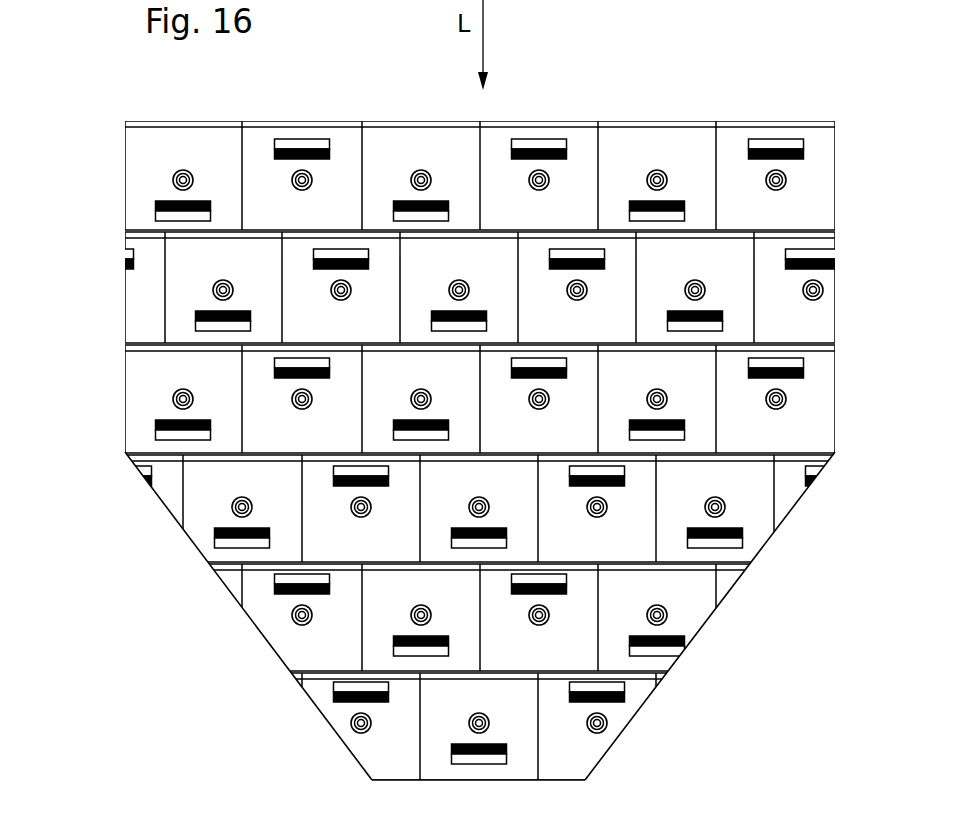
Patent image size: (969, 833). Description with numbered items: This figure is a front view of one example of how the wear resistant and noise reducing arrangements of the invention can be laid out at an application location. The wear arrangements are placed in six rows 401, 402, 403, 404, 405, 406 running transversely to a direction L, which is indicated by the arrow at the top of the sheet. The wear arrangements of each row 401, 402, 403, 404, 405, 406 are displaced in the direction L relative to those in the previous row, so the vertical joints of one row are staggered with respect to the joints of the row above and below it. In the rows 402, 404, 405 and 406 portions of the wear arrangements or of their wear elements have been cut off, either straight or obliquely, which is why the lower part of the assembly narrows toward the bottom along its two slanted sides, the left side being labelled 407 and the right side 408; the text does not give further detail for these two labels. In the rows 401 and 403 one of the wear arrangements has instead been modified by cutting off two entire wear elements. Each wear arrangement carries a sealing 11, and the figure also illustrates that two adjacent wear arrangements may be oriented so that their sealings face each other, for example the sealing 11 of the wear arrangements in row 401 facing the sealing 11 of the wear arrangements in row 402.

The sealing 11 is at (835, 122).
The row 401 is at (102, 183).
The row 402 is at (102, 292).
The row 403 is at (102, 401).
The row 404 is at (134, 520).
The row 405 is at (217, 627).
The row 406 is at (307, 750).
The left side edge of tile assembly 407 is at (280, 688).
The right side edge of tile assembly 408 is at (635, 705).